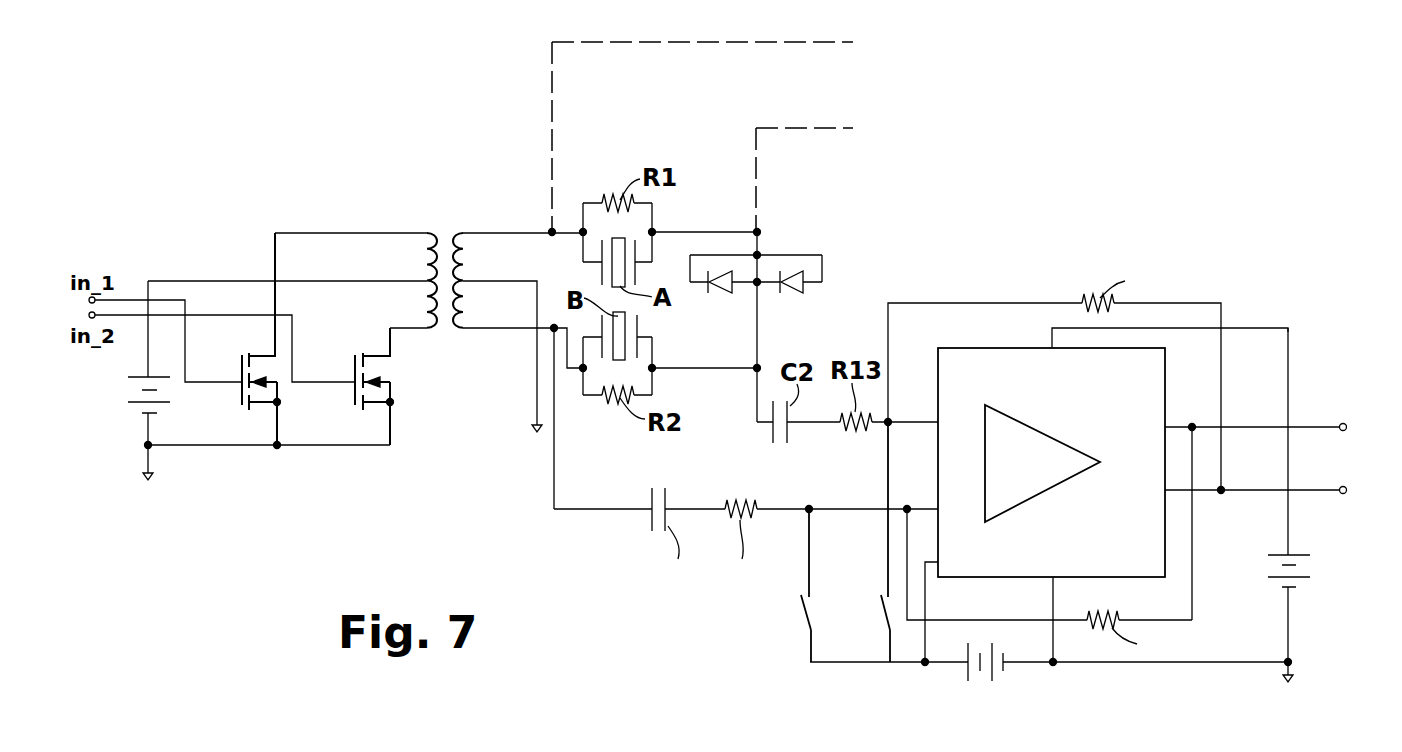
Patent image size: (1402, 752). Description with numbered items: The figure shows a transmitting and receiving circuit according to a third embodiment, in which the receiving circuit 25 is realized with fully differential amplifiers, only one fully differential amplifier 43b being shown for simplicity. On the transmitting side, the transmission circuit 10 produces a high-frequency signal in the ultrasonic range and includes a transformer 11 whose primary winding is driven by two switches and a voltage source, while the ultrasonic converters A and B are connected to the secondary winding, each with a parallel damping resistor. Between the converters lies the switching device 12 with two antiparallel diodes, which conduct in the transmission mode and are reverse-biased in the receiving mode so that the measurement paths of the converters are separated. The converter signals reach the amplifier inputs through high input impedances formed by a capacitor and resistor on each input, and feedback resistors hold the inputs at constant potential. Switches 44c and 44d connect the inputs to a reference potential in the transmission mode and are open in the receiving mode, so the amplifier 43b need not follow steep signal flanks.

The transmission circuit 10 is at (281, 188).
The transformer 11 is at (443, 186).
The switching device 12 is at (829, 239).
The receiving circuit 25 is at (1059, 232).
The fully differential amplifier 43b is at (1292, 297).
The switch 44c is at (802, 612).
The switch 44d is at (884, 610).